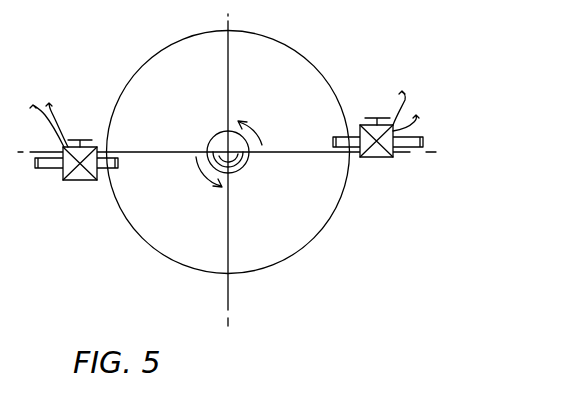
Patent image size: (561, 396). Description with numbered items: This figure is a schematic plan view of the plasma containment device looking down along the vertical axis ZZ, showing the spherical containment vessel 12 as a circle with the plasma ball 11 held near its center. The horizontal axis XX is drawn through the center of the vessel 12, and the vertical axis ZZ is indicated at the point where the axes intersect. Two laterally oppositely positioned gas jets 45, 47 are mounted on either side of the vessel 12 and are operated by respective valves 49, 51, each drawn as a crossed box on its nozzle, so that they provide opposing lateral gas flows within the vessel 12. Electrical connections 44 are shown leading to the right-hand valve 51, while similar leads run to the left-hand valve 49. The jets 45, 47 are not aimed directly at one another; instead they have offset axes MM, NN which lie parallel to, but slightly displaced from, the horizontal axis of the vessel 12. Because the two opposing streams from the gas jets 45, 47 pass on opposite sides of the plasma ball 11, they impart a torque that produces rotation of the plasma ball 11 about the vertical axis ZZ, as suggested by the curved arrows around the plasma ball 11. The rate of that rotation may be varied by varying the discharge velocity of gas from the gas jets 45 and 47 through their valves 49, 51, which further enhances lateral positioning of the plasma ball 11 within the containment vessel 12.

The plasma ball 11 is at (228, 131).
The containment vessel 12 is at (173, 35).
The electrical leads 44 is at (393, 157).
The lateral gas jet 45 is at (118, 168).
The lateral gas jet 47 is at (345, 147).
The valve 49 is at (97, 147).
The valve 51 is at (377, 157).
The offset axis MM is at (40, 169).
The offset axis NN is at (423, 137).
The horizontal axis XX is at (228, 296).
The vertical axis ZZ is at (230, 150).